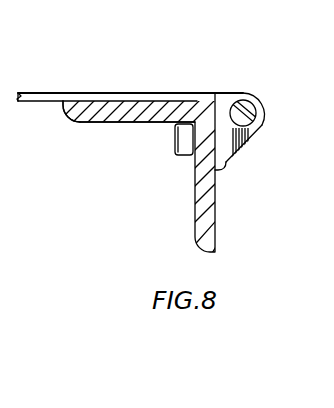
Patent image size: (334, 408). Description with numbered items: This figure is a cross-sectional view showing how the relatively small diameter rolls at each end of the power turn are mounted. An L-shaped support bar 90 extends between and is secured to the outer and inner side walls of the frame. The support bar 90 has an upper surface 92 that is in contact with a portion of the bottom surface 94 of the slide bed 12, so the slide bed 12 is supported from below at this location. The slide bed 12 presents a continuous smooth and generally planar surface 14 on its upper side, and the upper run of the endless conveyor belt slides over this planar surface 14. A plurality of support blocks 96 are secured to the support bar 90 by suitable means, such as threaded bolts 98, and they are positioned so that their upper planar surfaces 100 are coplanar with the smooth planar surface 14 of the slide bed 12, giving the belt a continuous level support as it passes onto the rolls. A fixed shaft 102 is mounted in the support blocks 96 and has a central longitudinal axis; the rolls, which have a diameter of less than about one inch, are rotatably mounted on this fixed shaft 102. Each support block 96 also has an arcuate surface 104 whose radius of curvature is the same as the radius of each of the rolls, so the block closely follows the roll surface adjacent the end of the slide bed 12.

The slide bed 12 is at (28, 103).
The generally planar surface 14 is at (167, 97).
The L-shaped support bar 90 is at (215, 230).
The upper surface 92 is at (128, 102).
The bottom surface 94 is at (55, 103).
The support block 96 is at (228, 170).
The threaded bolt 98 is at (185, 154).
The upper planar surface 100 is at (229, 96).
The fixed shaft 102 is at (259, 130).
The arcuate surface 104 is at (258, 117).